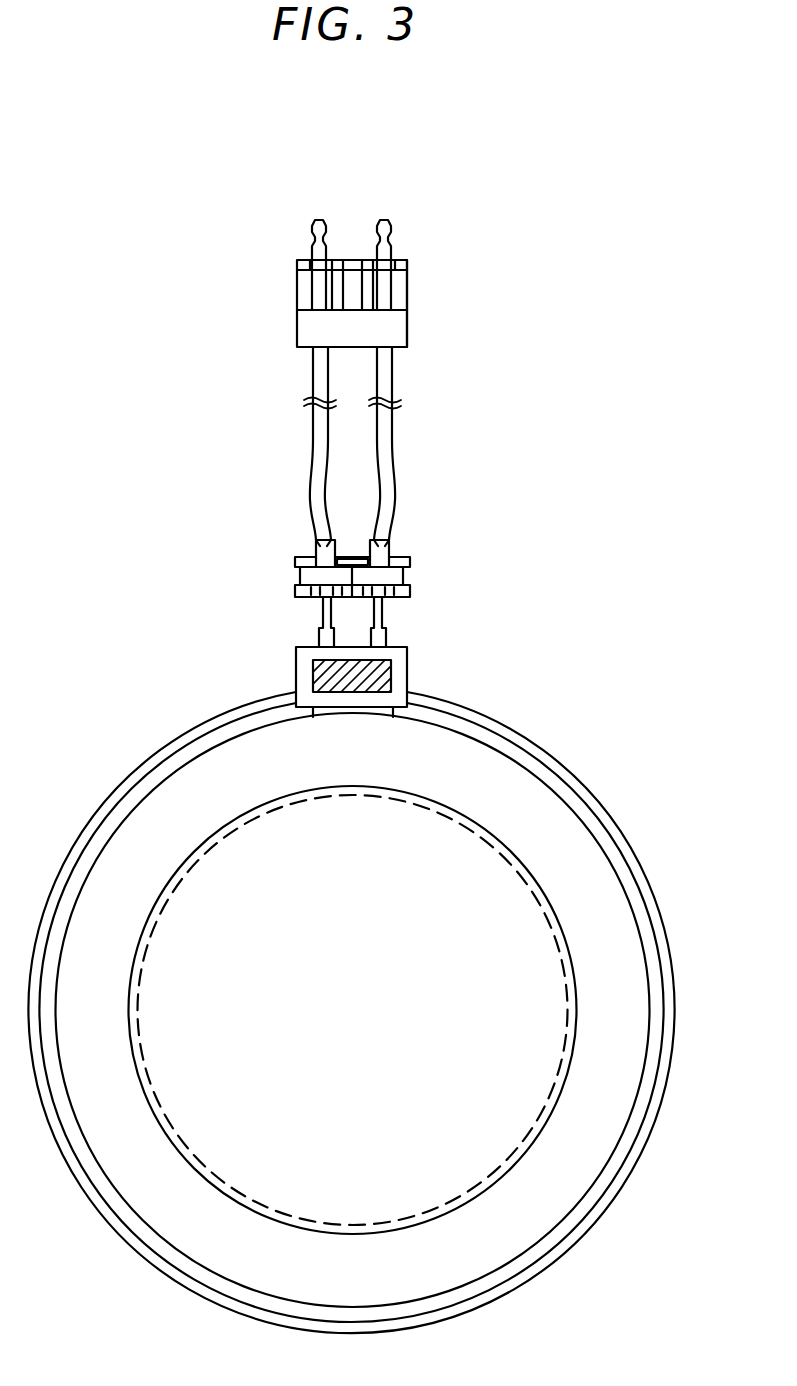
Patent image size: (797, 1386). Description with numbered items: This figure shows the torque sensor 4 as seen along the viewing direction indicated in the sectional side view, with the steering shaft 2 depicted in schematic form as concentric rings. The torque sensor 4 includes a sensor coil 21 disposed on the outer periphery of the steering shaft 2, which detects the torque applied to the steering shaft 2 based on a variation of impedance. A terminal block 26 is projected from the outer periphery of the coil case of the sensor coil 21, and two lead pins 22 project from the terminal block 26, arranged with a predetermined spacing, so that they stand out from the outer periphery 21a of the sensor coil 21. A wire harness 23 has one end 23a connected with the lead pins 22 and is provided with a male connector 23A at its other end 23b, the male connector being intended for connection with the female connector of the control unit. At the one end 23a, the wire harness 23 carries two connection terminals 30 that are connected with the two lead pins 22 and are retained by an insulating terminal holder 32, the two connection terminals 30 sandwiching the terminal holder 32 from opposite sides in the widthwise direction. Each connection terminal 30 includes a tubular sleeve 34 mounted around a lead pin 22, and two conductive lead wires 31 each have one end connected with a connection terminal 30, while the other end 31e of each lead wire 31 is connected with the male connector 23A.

The steering shaft 2 is at (536, 982).
The torque sensor 4 is at (611, 428).
The sensor coil 21 is at (506, 724).
The outer periphery of the sensor coil 21a is at (450, 701).
The lead pins 22 is at (323, 610).
The wire harness 23 is at (446, 432).
The male connector 23A is at (303, 292).
The one end of the wire harness 23a is at (297, 575).
The other end of the wire harness 23b is at (407, 290).
The terminal block 26 is at (296, 668).
The connection terminals 30 is at (319, 536).
The conductive lead wires 31 is at (306, 388).
The other end of the lead wire 31e is at (308, 358).
The terminal holder 32 is at (403, 575).
The tubular sleeve 34 is at (316, 552).